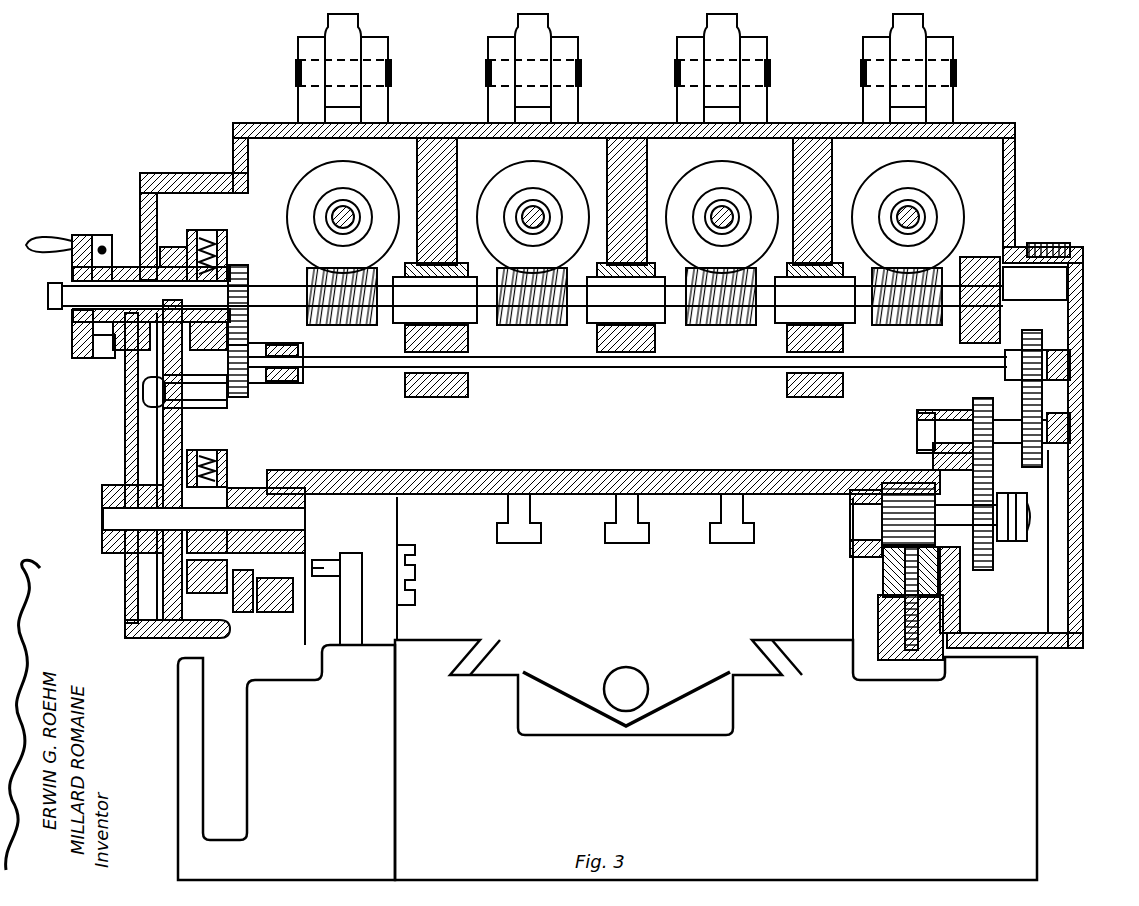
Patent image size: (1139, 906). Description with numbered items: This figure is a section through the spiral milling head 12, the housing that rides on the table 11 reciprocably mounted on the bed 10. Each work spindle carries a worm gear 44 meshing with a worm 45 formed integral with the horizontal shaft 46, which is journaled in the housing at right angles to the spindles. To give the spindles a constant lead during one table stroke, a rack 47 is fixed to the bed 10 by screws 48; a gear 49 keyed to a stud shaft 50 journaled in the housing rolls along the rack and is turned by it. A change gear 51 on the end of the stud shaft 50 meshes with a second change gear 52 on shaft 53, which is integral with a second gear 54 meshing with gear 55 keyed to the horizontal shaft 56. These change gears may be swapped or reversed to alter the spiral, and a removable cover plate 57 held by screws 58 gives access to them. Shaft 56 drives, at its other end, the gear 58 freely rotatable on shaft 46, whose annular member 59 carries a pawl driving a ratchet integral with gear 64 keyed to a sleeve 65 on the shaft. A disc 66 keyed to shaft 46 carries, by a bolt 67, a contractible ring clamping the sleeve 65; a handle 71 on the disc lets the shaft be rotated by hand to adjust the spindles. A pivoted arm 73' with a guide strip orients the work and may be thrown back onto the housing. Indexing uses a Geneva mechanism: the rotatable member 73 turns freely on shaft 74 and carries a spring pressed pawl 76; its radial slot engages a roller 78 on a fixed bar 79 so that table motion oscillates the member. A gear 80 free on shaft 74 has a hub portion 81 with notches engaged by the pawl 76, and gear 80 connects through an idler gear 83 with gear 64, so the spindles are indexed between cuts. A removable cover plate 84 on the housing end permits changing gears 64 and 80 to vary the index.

The bed 10 is at (1030, 766).
The table 11 is at (95, 209).
The spiral milling head 12 is at (1015, 216).
The worm gear 44 is at (350, 176).
The worm 45 is at (338, 325).
The horizontal shaft 46 is at (655, 330).
The rack 47 is at (886, 576).
The screws 48 is at (905, 640).
The gear 49 is at (895, 470).
The stud shaft 50 is at (858, 527).
The change gear 51 is at (985, 568).
The second change gear 52 is at (978, 398).
The shaft 53 is at (938, 438).
The second gear 54 is at (1040, 468).
The gear 55 is at (1036, 330).
The horizontal shaft 56 is at (762, 372).
The removable cover plate 57 is at (250, 390).
The gear 58 is at (240, 266).
The annular member 59 is at (218, 232).
The gear 64 is at (160, 247).
The sleeve 65 is at (142, 262).
The disc 66 is at (80, 235).
The bolt 67 is at (74, 350).
The handle 71 is at (40, 244).
The rotatable member 73 is at (203, 489).
The pivoted arm 73' is at (635, 66).
The shaft 74 is at (248, 508).
The spring pressed pawl 76 is at (232, 487).
The roller 78 is at (240, 612).
The fixed bar 79 is at (276, 606).
The gear 80 is at (170, 462).
The hub portion 81 is at (192, 580).
The idler gear 83 is at (160, 380).
The removable cover plate 84 is at (125, 593).